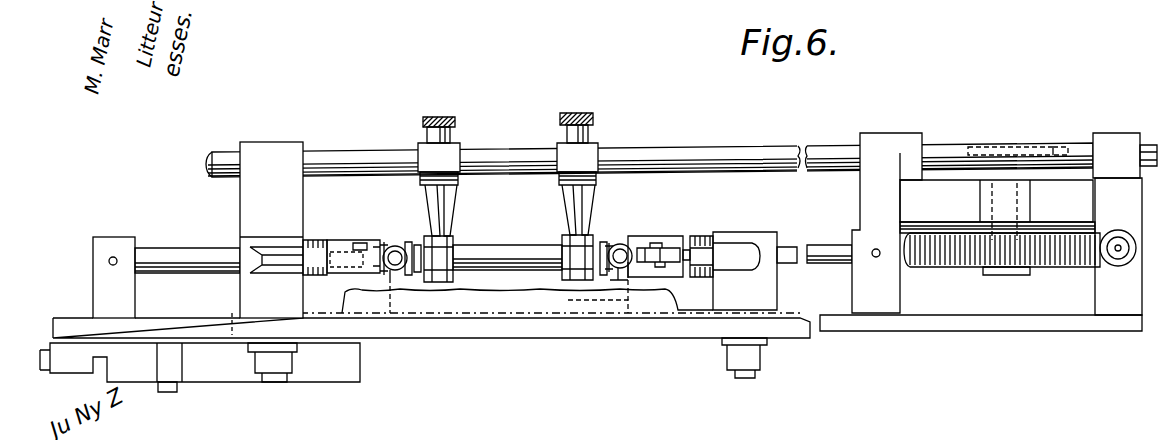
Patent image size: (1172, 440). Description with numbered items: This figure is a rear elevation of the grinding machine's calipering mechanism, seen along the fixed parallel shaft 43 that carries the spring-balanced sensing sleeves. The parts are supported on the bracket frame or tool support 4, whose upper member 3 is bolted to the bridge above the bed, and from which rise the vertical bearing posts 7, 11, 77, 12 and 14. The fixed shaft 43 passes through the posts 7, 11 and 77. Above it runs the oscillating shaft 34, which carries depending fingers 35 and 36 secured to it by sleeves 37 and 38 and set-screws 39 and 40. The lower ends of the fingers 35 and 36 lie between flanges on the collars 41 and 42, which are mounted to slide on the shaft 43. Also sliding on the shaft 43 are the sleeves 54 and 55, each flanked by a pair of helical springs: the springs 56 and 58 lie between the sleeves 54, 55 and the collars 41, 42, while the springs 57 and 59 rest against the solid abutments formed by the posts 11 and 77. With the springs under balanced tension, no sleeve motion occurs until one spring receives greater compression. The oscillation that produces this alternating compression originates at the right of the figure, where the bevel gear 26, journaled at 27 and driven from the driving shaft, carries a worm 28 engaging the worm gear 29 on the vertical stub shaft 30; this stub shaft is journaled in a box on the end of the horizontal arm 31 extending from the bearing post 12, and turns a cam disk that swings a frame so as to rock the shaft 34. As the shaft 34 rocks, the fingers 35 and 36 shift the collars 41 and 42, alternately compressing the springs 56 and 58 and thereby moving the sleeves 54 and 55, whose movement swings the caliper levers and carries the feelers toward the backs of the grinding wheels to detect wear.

The upper member 3 is at (515, 297).
The bracket frame 4 is at (701, 324).
The bearing post 7 is at (135, 251).
The bearing post 11 is at (782, 271).
The bearing post 12 is at (887, 223).
The bearing post 14 is at (1125, 224).
The bevel gear 26 is at (1110, 256).
The journal 27 is at (1117, 262).
The worm 28 is at (1102, 235).
The worm gear 29 is at (963, 262).
The vertical stub shaft 30 is at (1005, 174).
The horizontal arm 31 is at (997, 206).
The shaft 34 is at (755, 148).
The depending finger 35 is at (450, 204).
The depending finger 36 is at (596, 192).
The sleeve 37 is at (457, 153).
The sleeve 38 is at (597, 148).
The set-screw 39 is at (448, 116).
The set-screw 40 is at (590, 113).
The collar 41 is at (443, 282).
The collar 42 is at (574, 278).
The fixed parallel shaft 43 is at (510, 250).
The sliding sleeve 54 is at (358, 245).
The sliding sleeve 55 is at (680, 238).
The helical spring 56 is at (607, 246).
The helical spring 57 is at (708, 238).
The helical spring 58 is at (404, 242).
The helical spring 59 is at (318, 240).
The bearing post 77 is at (271, 230).